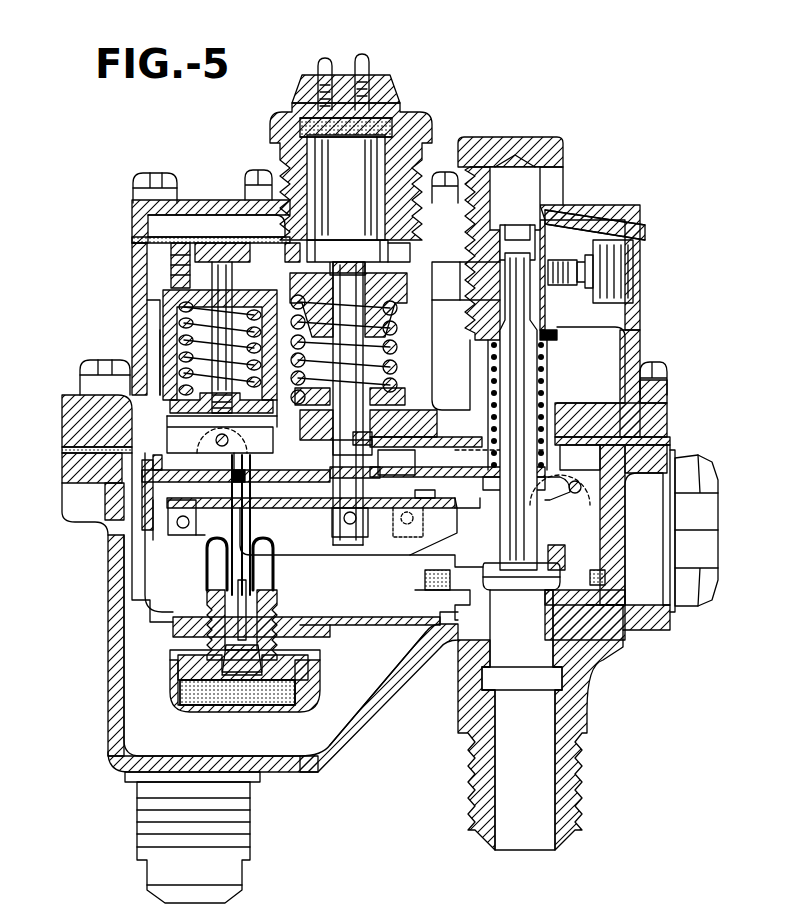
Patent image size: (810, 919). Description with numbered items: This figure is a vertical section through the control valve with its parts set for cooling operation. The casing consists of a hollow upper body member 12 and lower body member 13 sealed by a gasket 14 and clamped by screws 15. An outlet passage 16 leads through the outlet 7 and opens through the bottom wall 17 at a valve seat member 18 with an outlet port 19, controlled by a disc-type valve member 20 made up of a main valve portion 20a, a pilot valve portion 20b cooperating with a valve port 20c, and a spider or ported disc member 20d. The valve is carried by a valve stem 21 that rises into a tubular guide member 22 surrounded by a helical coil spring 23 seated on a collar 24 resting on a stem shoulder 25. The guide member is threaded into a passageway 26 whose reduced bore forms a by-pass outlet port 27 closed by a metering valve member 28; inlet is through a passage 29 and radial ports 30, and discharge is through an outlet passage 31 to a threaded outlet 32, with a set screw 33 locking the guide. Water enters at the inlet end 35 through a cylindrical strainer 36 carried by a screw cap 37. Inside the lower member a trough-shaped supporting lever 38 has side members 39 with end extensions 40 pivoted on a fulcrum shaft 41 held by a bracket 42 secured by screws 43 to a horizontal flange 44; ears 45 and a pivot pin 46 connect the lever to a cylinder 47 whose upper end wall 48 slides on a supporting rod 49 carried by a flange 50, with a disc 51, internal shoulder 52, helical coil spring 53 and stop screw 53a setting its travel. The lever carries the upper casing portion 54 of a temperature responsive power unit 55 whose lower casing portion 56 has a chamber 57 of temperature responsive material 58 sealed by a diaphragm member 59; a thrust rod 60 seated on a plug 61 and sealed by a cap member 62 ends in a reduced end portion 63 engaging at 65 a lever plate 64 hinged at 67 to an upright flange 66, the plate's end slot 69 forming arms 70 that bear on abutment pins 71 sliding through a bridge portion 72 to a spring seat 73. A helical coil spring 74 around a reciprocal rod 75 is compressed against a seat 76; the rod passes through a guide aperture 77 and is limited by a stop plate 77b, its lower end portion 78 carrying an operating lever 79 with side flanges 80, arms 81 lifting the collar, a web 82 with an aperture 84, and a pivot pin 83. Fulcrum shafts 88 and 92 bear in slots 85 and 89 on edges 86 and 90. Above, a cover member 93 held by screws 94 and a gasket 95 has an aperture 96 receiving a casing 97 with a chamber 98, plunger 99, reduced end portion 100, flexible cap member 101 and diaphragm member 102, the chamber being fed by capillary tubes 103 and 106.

The outlet 7 is at (585, 716).
The upper body member 12 is at (132, 318).
The lower body member 13 is at (108, 650).
The gasket 14 is at (670, 440).
The screws 15 is at (78, 380).
The outlet passage 16 is at (545, 720).
The bottom wall 17 is at (372, 700).
The valve seat member 18 is at (605, 628).
The outlet port 19 is at (535, 655).
The valve member 20 is at (600, 565).
The main valve portion 20a is at (462, 592).
The pilot valve portion 20b is at (512, 585).
The valve port 20c is at (535, 588).
The spider or ported disc member 20d is at (565, 548).
The valve stem 21 is at (542, 395).
The tubular guide member 22 is at (550, 372).
The helical coil spring 23 is at (552, 358).
The collar 24 is at (500, 483).
The stem shoulder 25 is at (537, 515).
The screw-threaded passageway 26 is at (548, 215).
The by-pass outlet port 27 is at (515, 222).
The metering valve member 28 is at (505, 240).
The passage 29 is at (466, 281).
The radial ports 30 is at (470, 312).
The outlet passage 31 is at (590, 220).
The screw-threaded outlet 32 is at (630, 290).
The set screw 33 is at (608, 278).
The inlet end 35 is at (140, 843).
The cylindrical strainer 36 is at (608, 575).
The screw cap 37 is at (700, 605).
The supporting lever 38 is at (368, 625).
The side members 39 is at (360, 609).
The end extensions 40 is at (495, 452).
The fulcrum shaft 41 is at (580, 495).
The bracket 42 is at (625, 480).
The screws 43 is at (568, 448).
The horizontal flange 44 is at (598, 410).
The ears or flanges 45 is at (222, 478).
The pivot pin 46 is at (232, 440).
The cylinder 47 is at (165, 345).
The upper end wall 48 is at (165, 298).
The supporting rod or screw 49 is at (218, 240).
The bracket or flange 50 is at (300, 268).
The disc 51 is at (175, 425).
The internal shoulder 52 is at (175, 418).
The helical coil spring 53 is at (185, 375).
The stop screw 53a is at (170, 262).
The upper casing portion 54 is at (272, 625).
The temperature responsive power unit 55 is at (178, 702).
The lower casing portion 56 is at (312, 698).
The chamber 57 is at (266, 705).
The temperature responsive material 58 is at (226, 705).
The diaphragm member 59 is at (182, 672).
The thrust rod 60 is at (238, 602).
The plug 61 is at (290, 660).
The cap member 62 is at (275, 568).
The reduced end portion 63 is at (245, 470).
The lever plate 64 is at (222, 426).
The abutting engagement 65 is at (252, 482).
The upright flange or wall 66 is at (158, 548).
The hinge connection 67 is at (150, 500).
The end slot 69 is at (330, 478).
The spaced arms 70 is at (400, 466).
The abutment pins 71 is at (345, 452).
The bridge or flange portion 72 is at (415, 410).
The spring seat or abutment member 73 is at (385, 385).
The helical coil spring 74 is at (398, 328).
The reciprocal rod 75 is at (348, 403).
The seat or abutment member 76 is at (390, 294).
The guide aperture 77 is at (300, 440).
The stop plate 77b is at (430, 440).
The lower end portion 78 is at (335, 525).
The operating lever 79 is at (362, 565).
The side flanges 80 is at (400, 545).
The arms 81 is at (470, 510).
The base flange or web 82 is at (432, 500).
The pivot pin 83 is at (350, 526).
The enlarged aperture 84 is at (262, 506).
The slots 85 is at (410, 475).
The bottom edges 86 is at (420, 520).
The fulcrum shaft 88 is at (407, 525).
The slots 89 is at (196, 540).
The upper end edges 90 is at (185, 494).
The fulcrum shaft 92 is at (180, 525).
The cover member 93 is at (230, 215).
The screws 94 is at (140, 182).
The gasket 95 is at (132, 238).
The aperture 96 is at (275, 180).
The casing 97 is at (418, 128).
The chamber 98 is at (385, 105).
The plunger 99 is at (352, 207).
The reduced end portion 100 is at (388, 262).
The flexible cap member 101 is at (310, 253).
The diaphragm member 102 is at (346, 140).
The capillary tube 103 is at (318, 68).
The capillary tube 106 is at (368, 64).